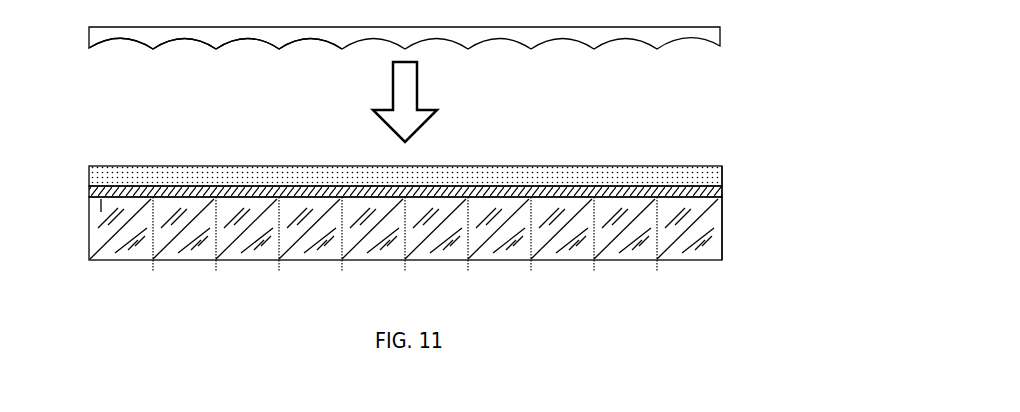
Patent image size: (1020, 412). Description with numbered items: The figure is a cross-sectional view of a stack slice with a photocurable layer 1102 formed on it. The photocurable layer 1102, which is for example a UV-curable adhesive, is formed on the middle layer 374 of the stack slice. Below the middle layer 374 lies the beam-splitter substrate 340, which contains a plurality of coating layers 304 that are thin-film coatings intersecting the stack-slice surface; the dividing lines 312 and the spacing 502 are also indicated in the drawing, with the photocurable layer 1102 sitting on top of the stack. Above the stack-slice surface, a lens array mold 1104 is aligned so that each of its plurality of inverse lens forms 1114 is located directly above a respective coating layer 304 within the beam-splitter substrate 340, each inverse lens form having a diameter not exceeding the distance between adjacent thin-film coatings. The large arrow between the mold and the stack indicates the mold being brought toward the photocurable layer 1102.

The lens array mold 1104 is at (720, 36).
The inverse lens forms 1114 is at (123, 40).
The photocurable layer 1102 is at (722, 176).
The middle layer 374 is at (722, 191).
The coating layer 304 is at (108, 238).
The pixel boundaries 312 is at (427, 290).
The gap 502 is at (101, 210).
The beam-splitter substrate 340 is at (744, 229).